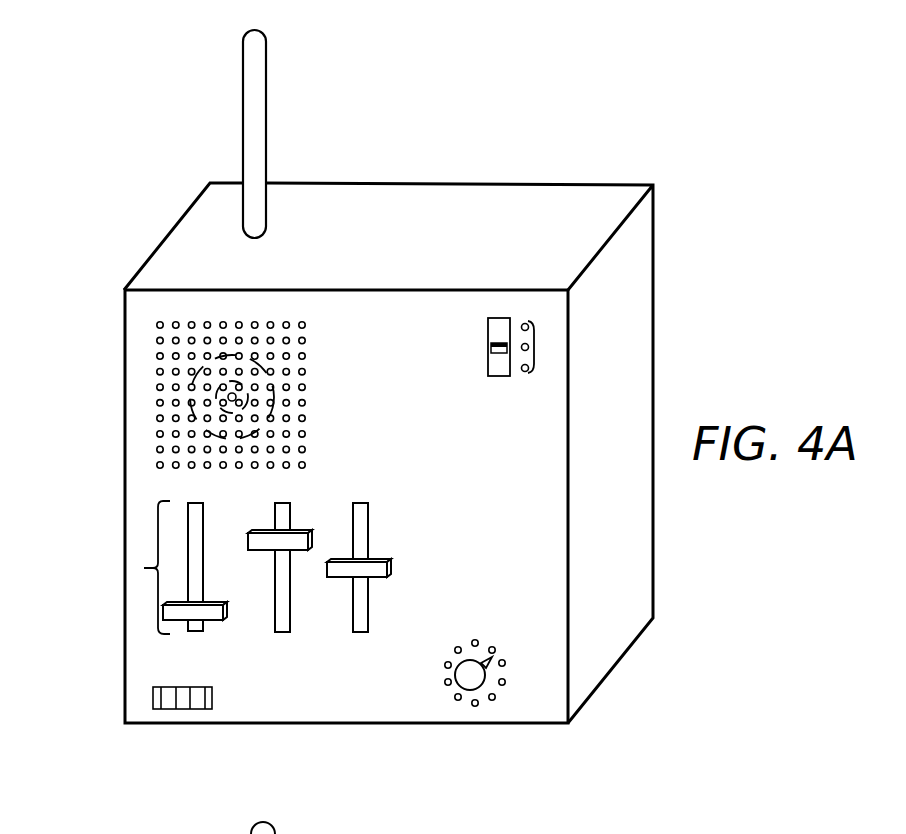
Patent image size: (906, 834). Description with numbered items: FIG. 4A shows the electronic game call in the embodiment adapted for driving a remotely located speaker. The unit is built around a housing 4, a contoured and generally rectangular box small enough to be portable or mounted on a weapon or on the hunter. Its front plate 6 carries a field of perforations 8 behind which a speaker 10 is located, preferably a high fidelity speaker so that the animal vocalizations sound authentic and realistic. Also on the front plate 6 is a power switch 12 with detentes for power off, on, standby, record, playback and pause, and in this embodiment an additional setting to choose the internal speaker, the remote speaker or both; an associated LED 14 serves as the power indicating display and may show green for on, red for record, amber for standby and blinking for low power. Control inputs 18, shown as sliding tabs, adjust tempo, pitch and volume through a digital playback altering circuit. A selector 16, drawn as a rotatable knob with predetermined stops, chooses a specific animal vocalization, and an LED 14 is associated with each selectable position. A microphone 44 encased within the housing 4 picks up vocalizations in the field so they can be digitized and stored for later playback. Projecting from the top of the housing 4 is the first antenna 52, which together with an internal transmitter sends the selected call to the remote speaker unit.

The housing 4 is at (716, 168).
The front plate 6 is at (366, 408).
The perforations 8 is at (158, 337).
The speaker 10 is at (228, 413).
The power switch 12 is at (500, 340).
The LED 14 is at (536, 347).
The selector 16 is at (468, 682).
The control inputs 18 is at (135, 568).
The microphone 44 is at (170, 710).
The first antenna 52 is at (267, 132).